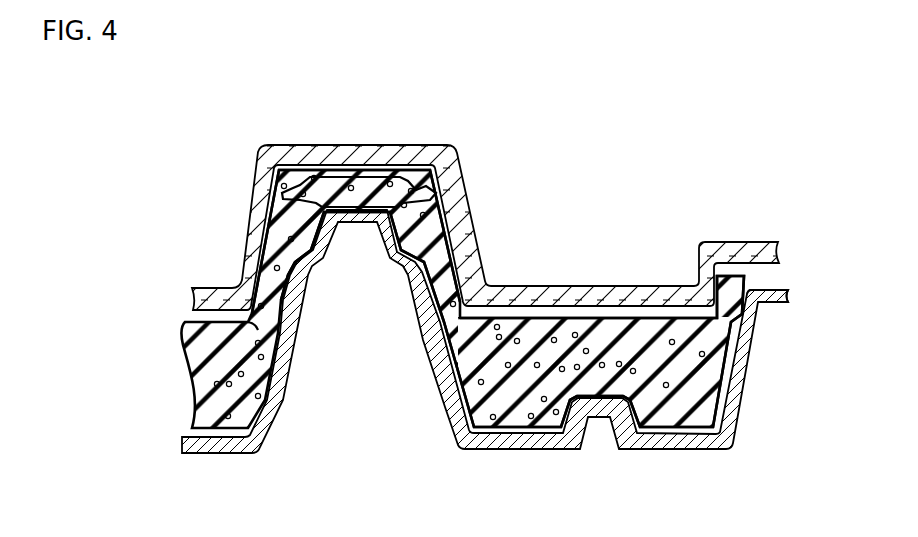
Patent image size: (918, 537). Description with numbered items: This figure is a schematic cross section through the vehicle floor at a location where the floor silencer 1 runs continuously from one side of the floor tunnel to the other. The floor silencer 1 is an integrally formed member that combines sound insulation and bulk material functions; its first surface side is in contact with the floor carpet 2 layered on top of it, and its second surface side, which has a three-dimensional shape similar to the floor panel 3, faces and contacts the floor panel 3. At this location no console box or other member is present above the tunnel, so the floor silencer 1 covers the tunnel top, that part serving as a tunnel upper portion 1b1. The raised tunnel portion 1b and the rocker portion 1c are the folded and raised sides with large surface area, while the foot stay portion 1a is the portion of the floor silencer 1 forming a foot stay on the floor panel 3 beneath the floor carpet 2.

The floor silencer 1 is at (584, 316).
The foot stay portion 1a is at (648, 330).
The tunnel portion 1b is at (434, 214).
The tunnel upper portion 1b1 is at (358, 192).
The rocker portion 1c is at (747, 291).
The floor carpet 2 is at (408, 146).
The floor panel 3 is at (447, 412).